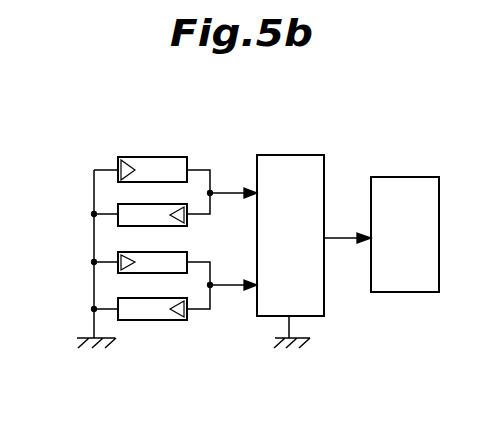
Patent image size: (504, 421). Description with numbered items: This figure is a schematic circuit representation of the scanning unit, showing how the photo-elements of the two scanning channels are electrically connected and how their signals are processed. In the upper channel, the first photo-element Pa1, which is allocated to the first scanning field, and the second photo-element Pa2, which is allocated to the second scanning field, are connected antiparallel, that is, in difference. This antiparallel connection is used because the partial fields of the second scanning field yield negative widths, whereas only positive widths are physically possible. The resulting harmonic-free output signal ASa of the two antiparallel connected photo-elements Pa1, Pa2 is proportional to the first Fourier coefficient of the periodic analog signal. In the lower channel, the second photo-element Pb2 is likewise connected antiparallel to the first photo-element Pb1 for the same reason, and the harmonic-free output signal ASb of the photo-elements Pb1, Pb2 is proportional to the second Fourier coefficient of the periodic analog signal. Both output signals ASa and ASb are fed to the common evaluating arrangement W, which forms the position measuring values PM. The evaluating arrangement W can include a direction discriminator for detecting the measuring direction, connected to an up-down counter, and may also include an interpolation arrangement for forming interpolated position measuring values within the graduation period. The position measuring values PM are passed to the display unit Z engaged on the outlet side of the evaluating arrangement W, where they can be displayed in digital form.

The first photo-element Pa1 is at (143, 162).
The second photo-element Pa2 is at (135, 208).
The first photo-element Pb1 is at (142, 255).
The second photo-element Pb2 is at (130, 302).
The harmonic-free output signal ASa is at (234, 192).
The harmonic-free output signal ASb is at (234, 287).
The position measuring values PM is at (340, 238).
The evaluating arrangement W is at (313, 305).
The display unit Z is at (416, 283).